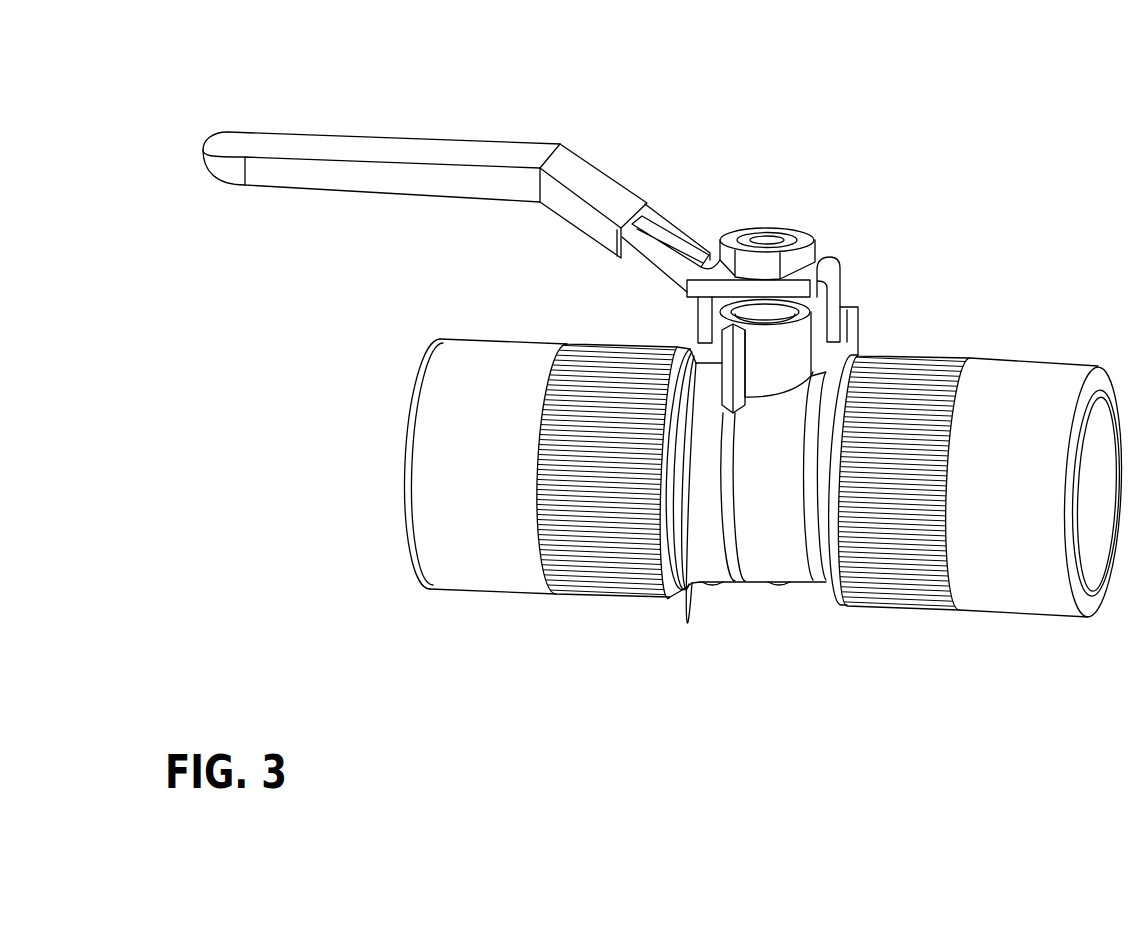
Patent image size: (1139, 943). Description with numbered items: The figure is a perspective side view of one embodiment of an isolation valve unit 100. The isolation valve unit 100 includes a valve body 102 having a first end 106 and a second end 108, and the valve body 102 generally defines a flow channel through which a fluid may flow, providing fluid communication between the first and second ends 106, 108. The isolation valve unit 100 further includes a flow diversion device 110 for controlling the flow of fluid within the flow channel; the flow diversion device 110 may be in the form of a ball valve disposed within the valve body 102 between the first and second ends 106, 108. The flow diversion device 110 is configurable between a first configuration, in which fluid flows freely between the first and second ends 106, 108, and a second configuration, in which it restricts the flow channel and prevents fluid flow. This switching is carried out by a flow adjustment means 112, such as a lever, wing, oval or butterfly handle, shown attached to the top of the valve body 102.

The isolation valve unit 100 is at (837, 147).
The valve body 102 is at (777, 583).
The first end 106 is at (1098, 363).
The second end 108 is at (448, 338).
The flow diversion device 110 is at (872, 310).
The flow adjustment means 112 is at (380, 147).